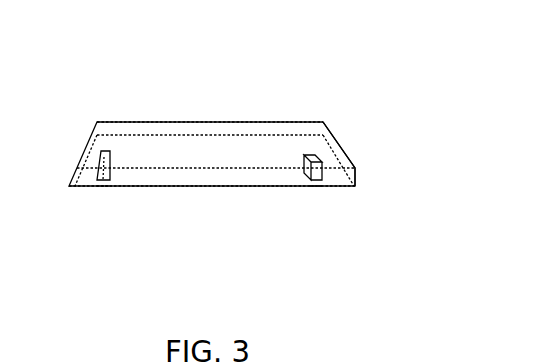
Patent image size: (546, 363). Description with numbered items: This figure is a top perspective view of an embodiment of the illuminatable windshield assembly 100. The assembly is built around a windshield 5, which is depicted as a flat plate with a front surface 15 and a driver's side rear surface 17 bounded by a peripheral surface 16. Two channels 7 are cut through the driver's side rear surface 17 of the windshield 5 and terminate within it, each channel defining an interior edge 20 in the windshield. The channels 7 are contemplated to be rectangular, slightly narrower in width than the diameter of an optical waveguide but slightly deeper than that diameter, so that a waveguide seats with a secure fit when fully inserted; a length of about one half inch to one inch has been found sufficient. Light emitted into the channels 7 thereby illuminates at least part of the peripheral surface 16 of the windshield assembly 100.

The windshield assembly 100 is at (157, 87).
The front surface 15 is at (183, 191).
The driver's side rear surface 17 is at (231, 137).
The windshield 5 is at (332, 112).
The interior edge 20 is at (95, 178).
The peripheral surface 16 is at (343, 177).
The channels 7 is at (315, 190).